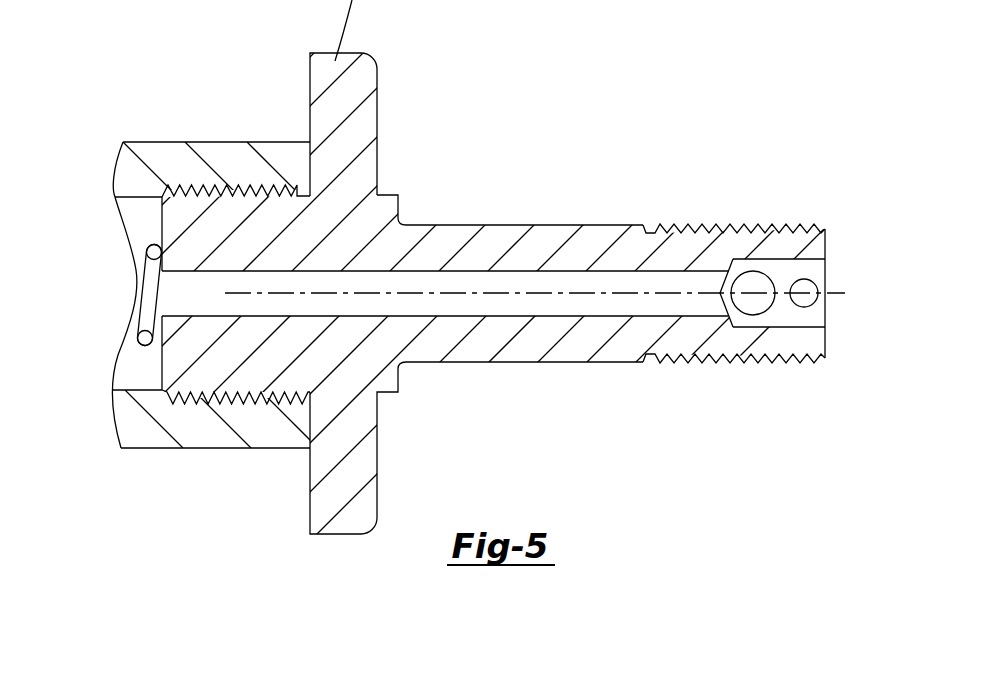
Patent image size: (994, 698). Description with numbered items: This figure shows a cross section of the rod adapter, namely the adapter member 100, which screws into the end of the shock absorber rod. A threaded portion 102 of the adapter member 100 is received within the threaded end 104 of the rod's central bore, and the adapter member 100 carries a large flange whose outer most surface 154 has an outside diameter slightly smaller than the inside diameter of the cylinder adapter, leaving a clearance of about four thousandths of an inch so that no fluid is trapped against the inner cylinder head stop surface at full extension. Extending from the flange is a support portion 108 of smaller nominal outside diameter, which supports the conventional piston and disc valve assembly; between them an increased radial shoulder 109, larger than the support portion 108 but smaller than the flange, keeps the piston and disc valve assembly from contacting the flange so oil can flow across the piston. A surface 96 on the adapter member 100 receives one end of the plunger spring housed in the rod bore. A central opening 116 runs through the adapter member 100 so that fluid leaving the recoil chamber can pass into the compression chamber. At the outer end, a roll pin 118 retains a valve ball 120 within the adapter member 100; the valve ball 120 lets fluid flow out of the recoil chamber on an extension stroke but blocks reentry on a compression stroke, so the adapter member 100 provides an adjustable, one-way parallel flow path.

The surface 96 is at (162, 365).
The adapter member 100 is at (517, 366).
The threaded portion 102 is at (240, 190).
The threaded end 104 is at (195, 216).
The support portion 108 is at (682, 245).
The radial shoulder 109 is at (390, 193).
The central opening 116 is at (191, 318).
The roll pin 118 is at (812, 284).
The valve ball 120 is at (752, 306).
The outer most surface 154 is at (338, 535).